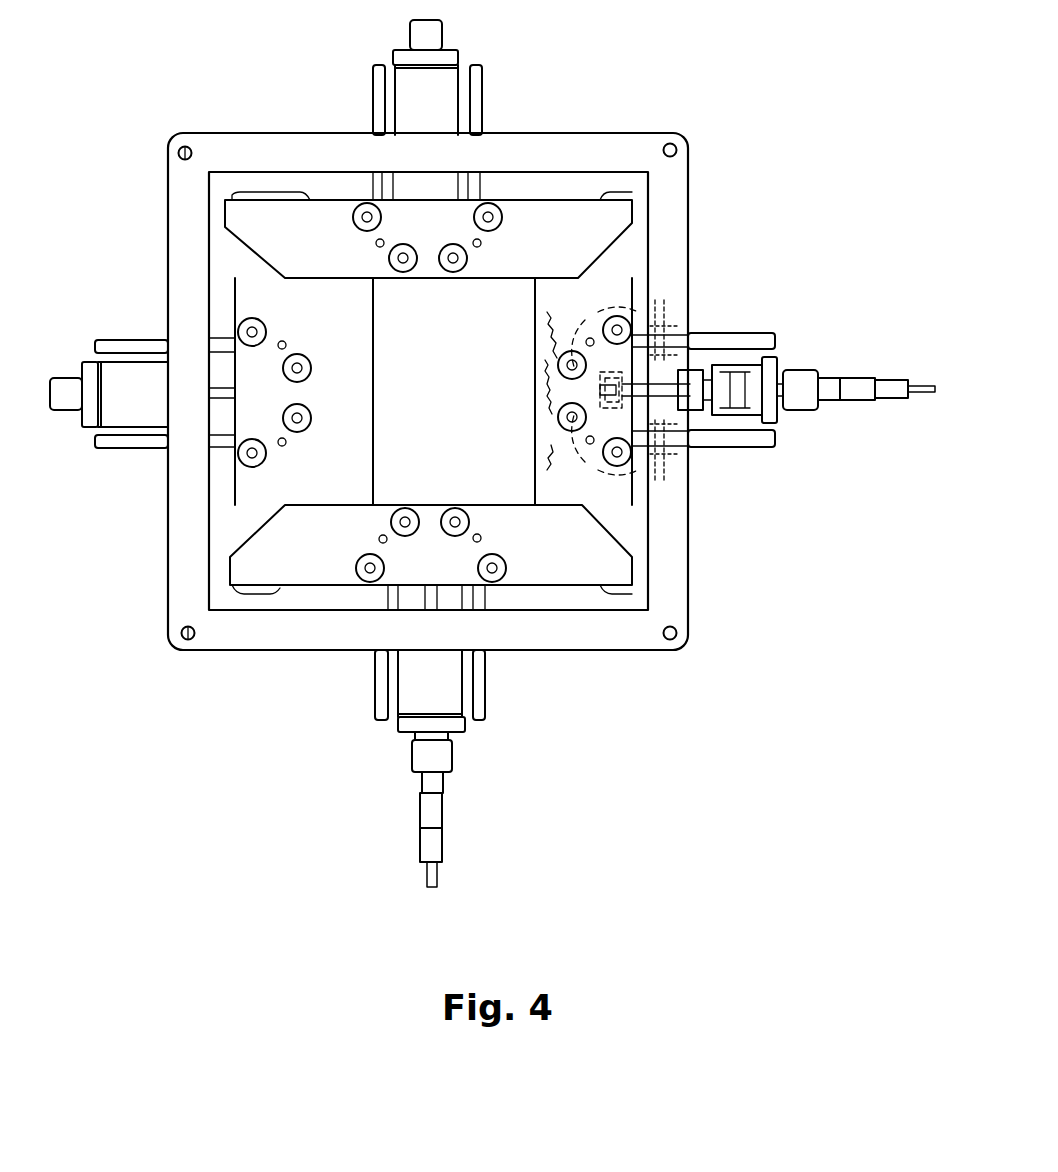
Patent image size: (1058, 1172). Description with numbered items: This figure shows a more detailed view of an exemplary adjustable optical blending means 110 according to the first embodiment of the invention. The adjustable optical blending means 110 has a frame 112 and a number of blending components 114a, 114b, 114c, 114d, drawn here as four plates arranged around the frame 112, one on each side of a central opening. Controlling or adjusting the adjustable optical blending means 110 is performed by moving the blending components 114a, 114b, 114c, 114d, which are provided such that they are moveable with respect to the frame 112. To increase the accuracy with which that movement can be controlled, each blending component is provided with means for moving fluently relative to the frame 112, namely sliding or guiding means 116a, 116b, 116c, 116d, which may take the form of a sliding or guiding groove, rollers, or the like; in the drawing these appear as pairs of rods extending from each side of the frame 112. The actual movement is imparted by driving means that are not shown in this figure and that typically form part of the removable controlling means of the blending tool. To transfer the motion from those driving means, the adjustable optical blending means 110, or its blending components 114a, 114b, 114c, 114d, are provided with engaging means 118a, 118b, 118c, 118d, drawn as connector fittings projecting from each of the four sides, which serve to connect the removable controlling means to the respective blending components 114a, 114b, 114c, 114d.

The adjustable optical blending means 110 is at (726, 100).
The frame 112 is at (680, 198).
The blending component 114a is at (553, 218).
The blending component 114b is at (610, 490).
The blending component 114c is at (330, 558).
The blending component 114d is at (245, 495).
The guiding means 116a is at (480, 116).
The guiding means 116b is at (717, 342).
The guiding means 116c is at (482, 668).
The guiding means 116d is at (134, 440).
The engaging means 118a is at (432, 33).
The engaging means 118b is at (807, 378).
The engaging means 118c is at (438, 758).
The engaging means 118d is at (63, 388).